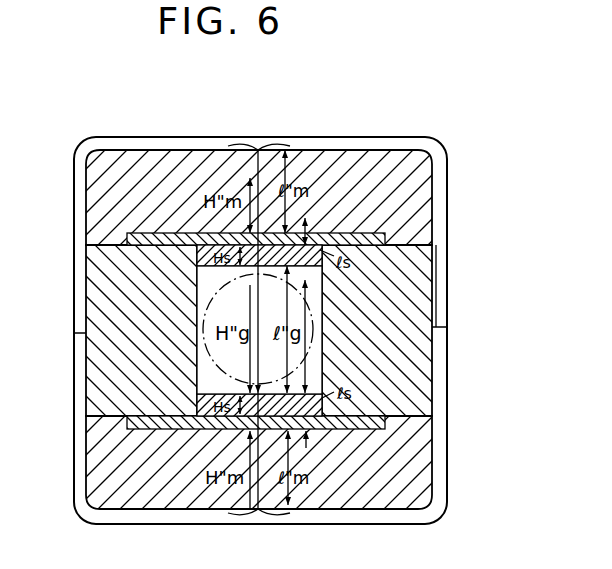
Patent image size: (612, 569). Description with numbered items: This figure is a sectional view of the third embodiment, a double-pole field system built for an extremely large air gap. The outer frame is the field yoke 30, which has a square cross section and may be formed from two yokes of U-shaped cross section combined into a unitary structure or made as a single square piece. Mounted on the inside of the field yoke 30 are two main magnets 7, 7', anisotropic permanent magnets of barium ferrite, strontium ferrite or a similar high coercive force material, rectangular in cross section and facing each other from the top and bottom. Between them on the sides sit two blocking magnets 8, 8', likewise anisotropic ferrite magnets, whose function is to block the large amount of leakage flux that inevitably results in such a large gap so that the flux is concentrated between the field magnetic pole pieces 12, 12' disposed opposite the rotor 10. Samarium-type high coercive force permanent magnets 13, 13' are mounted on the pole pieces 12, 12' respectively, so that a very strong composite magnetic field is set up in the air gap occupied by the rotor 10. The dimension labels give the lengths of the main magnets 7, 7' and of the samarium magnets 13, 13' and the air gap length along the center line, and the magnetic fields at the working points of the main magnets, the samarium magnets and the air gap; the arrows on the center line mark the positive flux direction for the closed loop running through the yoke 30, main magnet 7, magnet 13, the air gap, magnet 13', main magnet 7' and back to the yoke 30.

The main magnet 7 is at (306, 314).
The main magnet 7' is at (306, 330).
The blocking magnet 8 is at (306, 330).
The blocking magnet 8' is at (306, 330).
The rotor 10 is at (197, 376).
The field magnetic pole piece 12 is at (291, 310).
The field magnetic pole piece 12' is at (291, 355).
The high coercive force permanent magnet 13 is at (255, 304).
The high coercive force permanent magnet 13' is at (255, 360).
The field yoke 30 is at (80, 386).